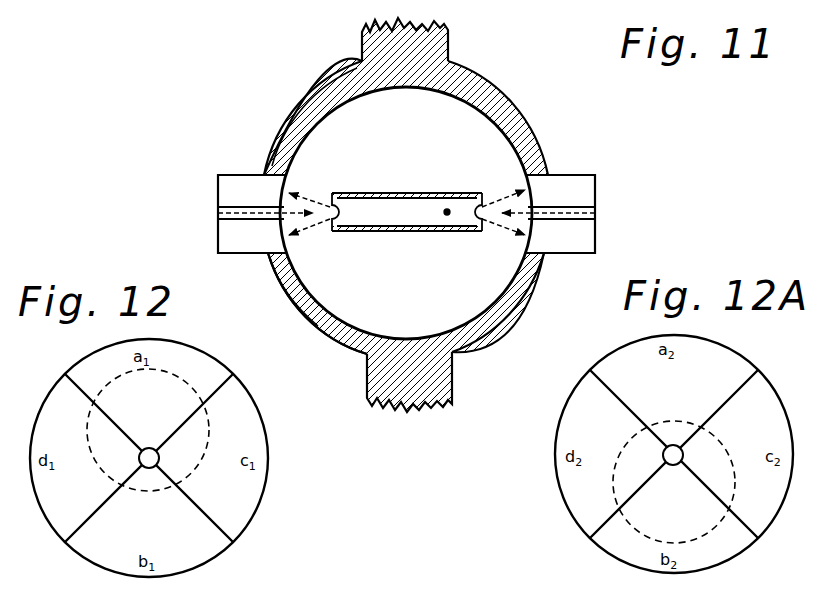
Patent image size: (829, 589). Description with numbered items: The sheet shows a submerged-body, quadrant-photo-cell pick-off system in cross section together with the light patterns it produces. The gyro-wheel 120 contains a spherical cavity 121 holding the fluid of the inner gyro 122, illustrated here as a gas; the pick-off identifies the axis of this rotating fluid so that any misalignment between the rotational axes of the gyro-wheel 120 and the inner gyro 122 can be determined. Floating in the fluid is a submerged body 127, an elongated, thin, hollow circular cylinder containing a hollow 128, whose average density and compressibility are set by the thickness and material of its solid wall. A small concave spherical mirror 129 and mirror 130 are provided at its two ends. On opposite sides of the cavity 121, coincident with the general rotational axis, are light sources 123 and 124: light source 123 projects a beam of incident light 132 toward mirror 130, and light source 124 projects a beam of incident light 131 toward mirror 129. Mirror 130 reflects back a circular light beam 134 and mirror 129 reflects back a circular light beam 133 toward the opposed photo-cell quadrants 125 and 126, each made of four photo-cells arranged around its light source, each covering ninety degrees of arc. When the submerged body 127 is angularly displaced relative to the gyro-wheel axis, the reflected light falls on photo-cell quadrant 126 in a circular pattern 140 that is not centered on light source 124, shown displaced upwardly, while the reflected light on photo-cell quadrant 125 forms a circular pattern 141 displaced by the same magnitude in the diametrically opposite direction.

In FIG. 11, the gyro-wheel 120 is at (448, 42).
In FIG. 11, the spherical cavity 121 is at (325, 114).
In FIG. 11, the inner gyro 122 is at (470, 138).
In FIG. 11, the light source 123 is at (594, 211).
In FIG. 12A, the light source 123 is at (675, 445).
In FIG. 11, the light source 124 is at (222, 213).
In FIG. 12, the light source 124 is at (150, 468).
In FIG. 11, the photo-cell quadrant 125 is at (587, 172).
In FIG. 12A, the photo-cell quadrant 125 is at (573, 392).
In FIG. 11, the photo-cell quadrant 126 is at (236, 176).
In FIG. 12, the photo-cell quadrant 126 is at (254, 400).
In FIG. 11, the submerged body 127 is at (433, 193).
In FIG. 11, the hollow 128 is at (447, 215).
In FIG. 11, the mirror 129 is at (332, 218).
In FIG. 11, the mirror 130 is at (482, 218).
In FIG. 11, the beam of incident light 131 is at (305, 222).
In FIG. 11, the beam of incident light 132 is at (518, 222).
In FIG. 11, the circular light beam 133 is at (296, 287).
In FIG. 11, the circular light beam 134 is at (524, 262).
In FIG. 12, the circular pattern 140 is at (208, 428).
In FIG. 12A, the circular pattern 141 is at (625, 447).